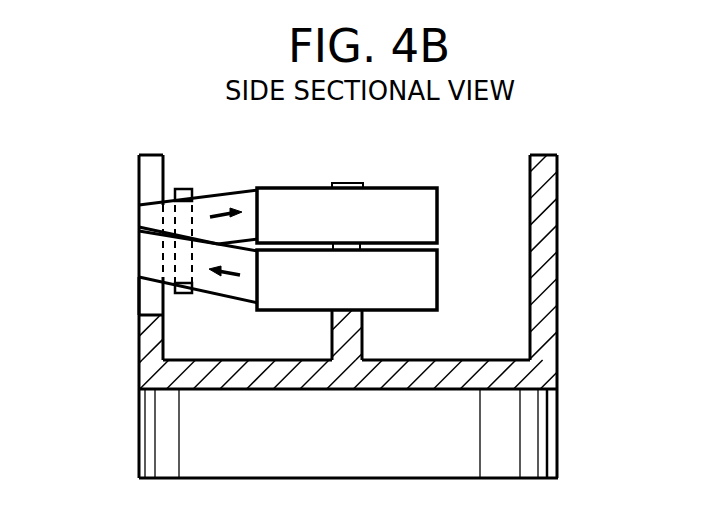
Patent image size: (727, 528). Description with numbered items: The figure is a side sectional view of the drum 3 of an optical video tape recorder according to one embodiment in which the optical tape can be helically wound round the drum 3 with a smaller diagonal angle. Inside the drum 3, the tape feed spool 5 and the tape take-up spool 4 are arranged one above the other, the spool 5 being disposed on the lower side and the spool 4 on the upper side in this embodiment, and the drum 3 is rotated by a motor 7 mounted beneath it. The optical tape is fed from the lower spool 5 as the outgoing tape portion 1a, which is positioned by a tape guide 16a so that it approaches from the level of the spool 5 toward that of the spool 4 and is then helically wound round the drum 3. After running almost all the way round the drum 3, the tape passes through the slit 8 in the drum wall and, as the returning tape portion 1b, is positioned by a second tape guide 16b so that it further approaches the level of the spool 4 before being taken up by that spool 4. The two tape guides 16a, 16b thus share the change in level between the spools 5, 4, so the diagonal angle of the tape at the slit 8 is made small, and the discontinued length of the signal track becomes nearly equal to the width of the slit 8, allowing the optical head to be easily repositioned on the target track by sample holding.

The optical tape portion (led out from feed spool) 1a is at (243, 200).
The optical tape portion (taken up by take-up spool) 1b is at (150, 252).
The drum 3 is at (557, 197).
The tape take-up spool 4 is at (400, 200).
The tape feed spool 5 is at (432, 277).
The motor 7 is at (548, 440).
The slit 8 is at (150, 305).
The tape guide 16a is at (182, 188).
The tape guide 16b is at (190, 293).